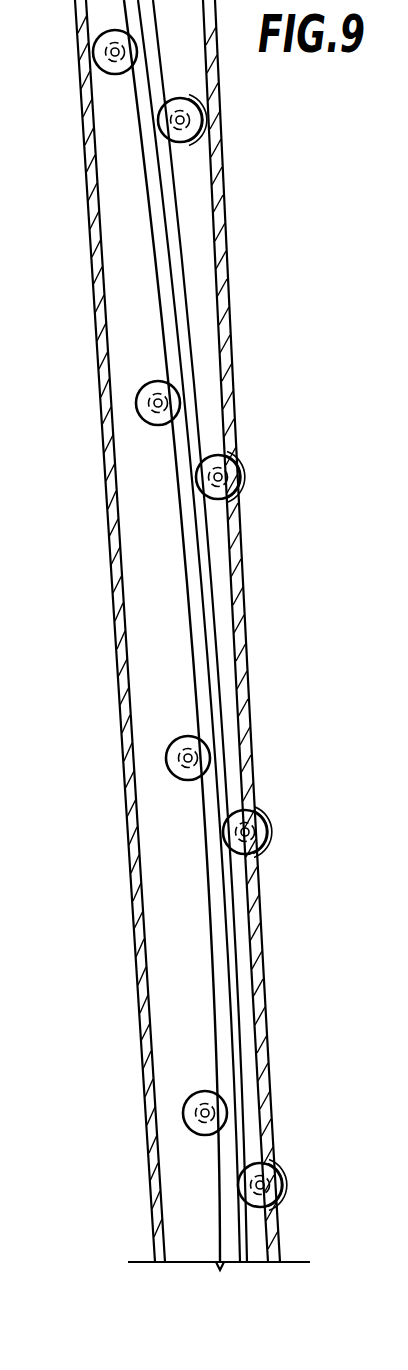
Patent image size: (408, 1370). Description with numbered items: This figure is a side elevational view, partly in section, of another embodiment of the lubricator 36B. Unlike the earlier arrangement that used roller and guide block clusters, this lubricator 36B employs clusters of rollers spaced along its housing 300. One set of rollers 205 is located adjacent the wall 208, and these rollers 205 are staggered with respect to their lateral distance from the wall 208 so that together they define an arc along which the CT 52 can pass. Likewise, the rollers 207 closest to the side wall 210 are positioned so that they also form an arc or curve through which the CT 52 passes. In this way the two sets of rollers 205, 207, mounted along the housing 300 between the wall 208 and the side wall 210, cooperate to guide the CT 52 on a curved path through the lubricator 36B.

The lubricator 36B is at (250, 227).
The CT 52 is at (197, 620).
The rollers 205 is at (202, 121).
The rollers 207 is at (137, 407).
The wall 208 is at (276, 631).
The side wall 210 is at (110, 538).
The housing 300 is at (230, 333).